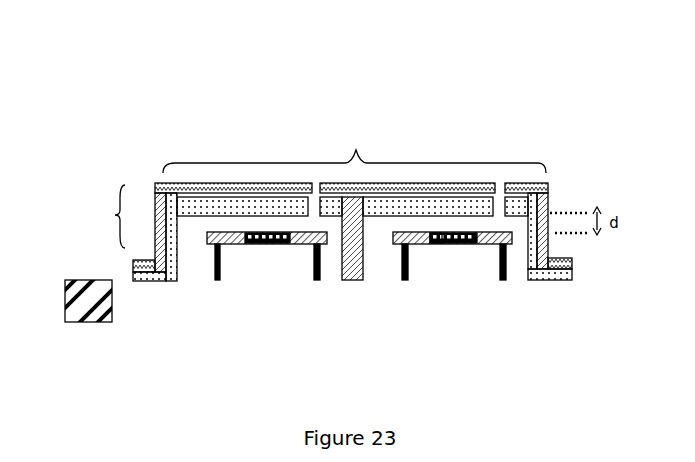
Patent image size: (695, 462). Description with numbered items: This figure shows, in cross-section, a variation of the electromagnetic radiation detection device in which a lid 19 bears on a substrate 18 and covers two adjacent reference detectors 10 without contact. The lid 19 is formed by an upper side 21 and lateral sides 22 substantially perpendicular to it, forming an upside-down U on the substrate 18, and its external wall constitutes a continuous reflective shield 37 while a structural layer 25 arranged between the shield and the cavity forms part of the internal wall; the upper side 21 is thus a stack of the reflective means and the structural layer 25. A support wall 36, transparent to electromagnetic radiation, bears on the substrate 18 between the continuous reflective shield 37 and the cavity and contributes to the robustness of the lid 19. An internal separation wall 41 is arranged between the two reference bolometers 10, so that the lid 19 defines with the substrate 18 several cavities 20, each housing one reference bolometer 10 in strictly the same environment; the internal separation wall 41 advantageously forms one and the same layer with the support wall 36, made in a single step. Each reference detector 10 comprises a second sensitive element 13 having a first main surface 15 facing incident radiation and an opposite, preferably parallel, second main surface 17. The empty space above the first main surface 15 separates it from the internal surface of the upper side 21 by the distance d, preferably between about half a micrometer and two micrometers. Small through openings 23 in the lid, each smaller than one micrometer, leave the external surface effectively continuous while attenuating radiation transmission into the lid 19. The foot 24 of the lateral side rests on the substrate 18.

The reference detector 10 is at (250, 213).
The second sensitive element 13 is at (262, 244).
The first main surface 15 is at (442, 232).
The second main surface 17 is at (457, 247).
The substrate 18 is at (555, 305).
The lid 19 is at (170, 153).
The cavity 20 is at (195, 260).
The upper side 21 is at (354, 136).
The lateral side 22 is at (104, 216).
The opening 23 is at (314, 203).
The left foot 24 is at (140, 262).
The structural layer 25 is at (513, 210).
The support wall 36 is at (525, 202).
The continuous reflective shield 37 is at (160, 186).
The internal separation wall 41 is at (343, 278).